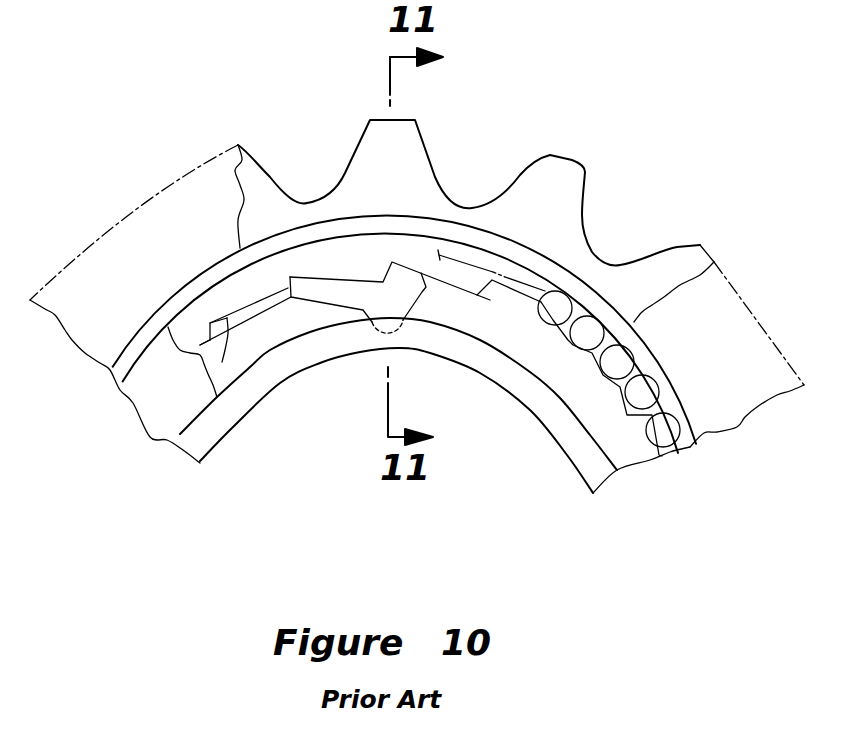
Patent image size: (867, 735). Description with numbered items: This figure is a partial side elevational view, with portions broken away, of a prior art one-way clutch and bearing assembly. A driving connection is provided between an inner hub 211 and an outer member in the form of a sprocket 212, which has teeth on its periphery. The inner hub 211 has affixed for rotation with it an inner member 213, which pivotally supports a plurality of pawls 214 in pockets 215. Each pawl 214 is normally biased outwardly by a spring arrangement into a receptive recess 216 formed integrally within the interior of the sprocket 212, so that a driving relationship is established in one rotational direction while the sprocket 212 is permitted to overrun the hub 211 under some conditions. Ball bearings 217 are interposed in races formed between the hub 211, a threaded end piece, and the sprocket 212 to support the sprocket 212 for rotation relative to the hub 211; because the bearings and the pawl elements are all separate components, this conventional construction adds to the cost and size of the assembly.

The inner hub 211 is at (217, 425).
The sprocket 212 is at (571, 158).
The inner member 213 is at (145, 375).
The pawl 214 is at (307, 293).
The pocket 215 is at (424, 299).
The recess 216 is at (222, 362).
The ball bearing 217 is at (667, 437).